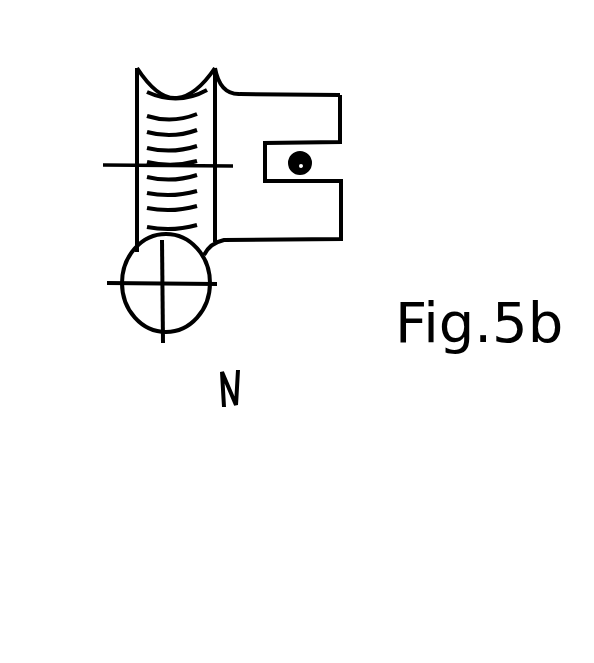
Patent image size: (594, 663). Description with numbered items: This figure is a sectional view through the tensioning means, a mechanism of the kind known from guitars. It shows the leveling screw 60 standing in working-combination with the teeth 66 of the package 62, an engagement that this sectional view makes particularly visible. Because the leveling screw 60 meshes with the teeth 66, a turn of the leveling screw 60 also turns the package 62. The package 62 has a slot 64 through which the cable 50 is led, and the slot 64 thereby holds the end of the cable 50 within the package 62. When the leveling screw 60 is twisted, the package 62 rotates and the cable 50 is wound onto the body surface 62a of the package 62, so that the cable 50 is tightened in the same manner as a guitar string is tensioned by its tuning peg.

The cable 50 is at (296, 180).
The leveling screw 60 is at (183, 302).
The package 62 is at (247, 108).
The body surface 62a is at (307, 90).
The slot 64 is at (328, 163).
The teeth 66 is at (173, 90).